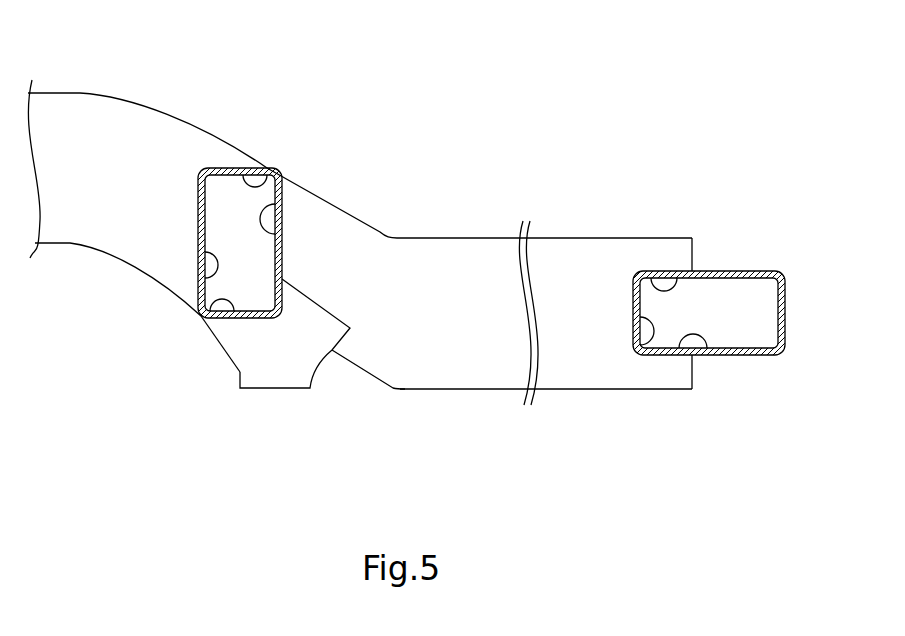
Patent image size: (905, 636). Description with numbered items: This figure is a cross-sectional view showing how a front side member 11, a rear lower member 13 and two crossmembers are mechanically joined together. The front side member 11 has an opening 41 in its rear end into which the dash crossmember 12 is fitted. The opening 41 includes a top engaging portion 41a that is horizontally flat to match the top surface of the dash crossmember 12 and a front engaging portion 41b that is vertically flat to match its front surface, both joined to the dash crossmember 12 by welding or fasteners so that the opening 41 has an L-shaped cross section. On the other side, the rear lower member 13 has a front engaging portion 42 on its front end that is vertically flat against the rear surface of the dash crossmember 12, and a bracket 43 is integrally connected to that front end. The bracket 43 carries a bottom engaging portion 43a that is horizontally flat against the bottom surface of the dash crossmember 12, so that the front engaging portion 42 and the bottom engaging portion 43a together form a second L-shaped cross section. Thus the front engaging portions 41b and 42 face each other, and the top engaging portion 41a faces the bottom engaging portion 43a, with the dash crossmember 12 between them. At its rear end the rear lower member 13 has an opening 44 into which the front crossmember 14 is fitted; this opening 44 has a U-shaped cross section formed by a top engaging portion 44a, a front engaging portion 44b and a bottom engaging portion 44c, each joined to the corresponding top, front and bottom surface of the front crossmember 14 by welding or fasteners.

The front side member 11 is at (120, 127).
The dash crossmember 12 is at (224, 167).
The rear lower member 13 is at (462, 257).
The front crossmember 14 is at (761, 271).
The opening 41 is at (215, 213).
The top engaging portion 41a is at (272, 168).
The front engaging portion 41b is at (197, 287).
The front engaging portion 42 is at (280, 204).
The bracket 43 is at (272, 372).
The bottom engaging portion 43a is at (201, 318).
The opening 44 is at (647, 298).
The top engaging portion 44a is at (653, 272).
The front engaging portion 44b is at (651, 353).
The bottom engaging portion 44c is at (693, 357).